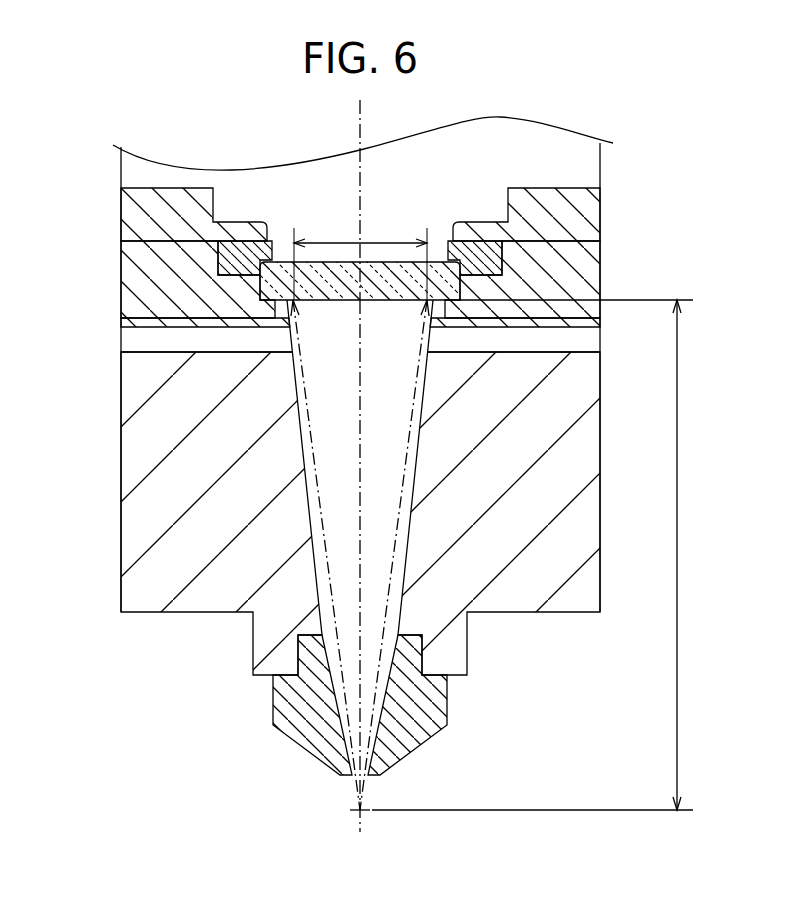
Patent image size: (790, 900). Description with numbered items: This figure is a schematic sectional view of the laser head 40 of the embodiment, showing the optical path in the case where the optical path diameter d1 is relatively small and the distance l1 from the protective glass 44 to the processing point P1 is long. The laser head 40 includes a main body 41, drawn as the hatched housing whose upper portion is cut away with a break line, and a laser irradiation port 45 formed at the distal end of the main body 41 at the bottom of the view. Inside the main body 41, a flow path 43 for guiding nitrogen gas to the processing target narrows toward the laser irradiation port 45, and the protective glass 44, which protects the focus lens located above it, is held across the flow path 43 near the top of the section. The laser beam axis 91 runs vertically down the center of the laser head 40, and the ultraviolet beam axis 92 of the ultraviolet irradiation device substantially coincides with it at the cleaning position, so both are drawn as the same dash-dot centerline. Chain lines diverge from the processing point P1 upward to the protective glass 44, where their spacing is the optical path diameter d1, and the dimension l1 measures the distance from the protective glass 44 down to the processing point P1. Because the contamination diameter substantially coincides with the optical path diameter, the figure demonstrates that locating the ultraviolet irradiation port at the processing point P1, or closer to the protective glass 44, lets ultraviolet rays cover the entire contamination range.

The laser head 40 is at (372, 457).
The main body 41 is at (602, 163).
The flow path 43 is at (303, 481).
The protective glass 44 is at (448, 278).
The laser irradiation port 45 is at (352, 776).
The laser beam axis 91 is at (360, 203).
The ultraviolet beam axis 92 is at (360, 400).
The processing point P1 is at (337, 817).
The optical path diameter d1 is at (360, 257).
The distance l1 is at (537, 555).